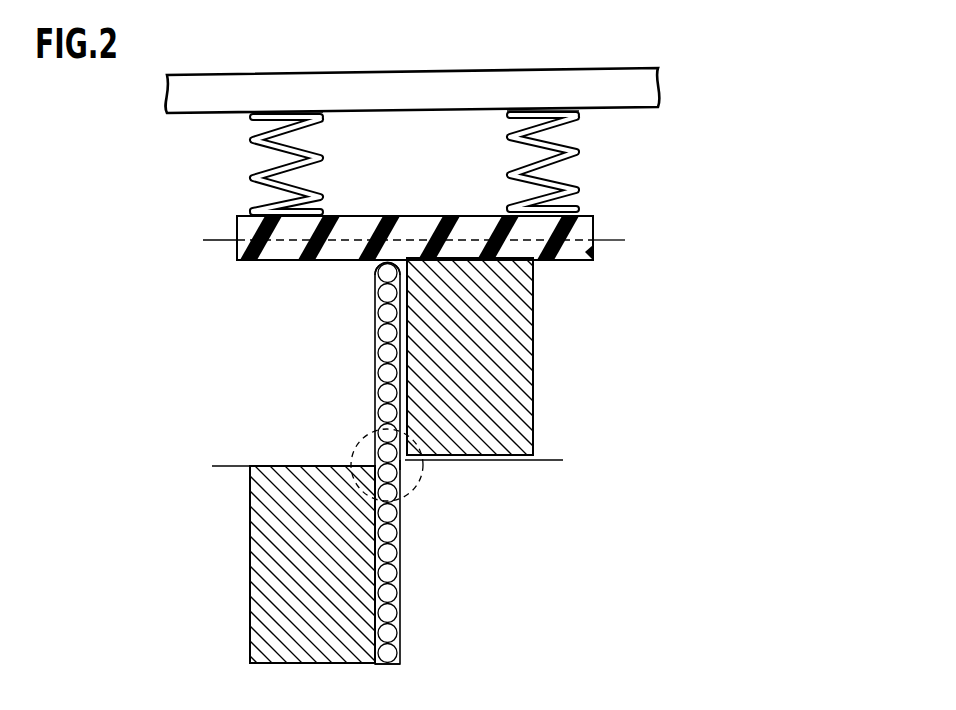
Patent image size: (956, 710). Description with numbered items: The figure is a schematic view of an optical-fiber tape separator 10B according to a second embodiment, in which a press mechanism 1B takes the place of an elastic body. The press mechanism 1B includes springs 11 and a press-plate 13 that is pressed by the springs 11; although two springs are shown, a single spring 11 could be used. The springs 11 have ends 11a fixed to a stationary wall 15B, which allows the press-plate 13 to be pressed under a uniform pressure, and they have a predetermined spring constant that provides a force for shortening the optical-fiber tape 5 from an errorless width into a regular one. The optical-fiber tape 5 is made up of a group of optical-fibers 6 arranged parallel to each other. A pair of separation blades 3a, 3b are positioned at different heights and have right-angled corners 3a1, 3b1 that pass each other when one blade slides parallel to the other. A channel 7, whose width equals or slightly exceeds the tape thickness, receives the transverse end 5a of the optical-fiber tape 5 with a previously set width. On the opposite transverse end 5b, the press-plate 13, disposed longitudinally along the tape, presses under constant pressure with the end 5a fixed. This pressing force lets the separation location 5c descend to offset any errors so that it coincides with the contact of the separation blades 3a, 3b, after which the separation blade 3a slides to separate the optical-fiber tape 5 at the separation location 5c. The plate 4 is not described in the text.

The stationary wall 15B is at (563, 88).
The optical-fiber tape separator 10B is at (720, 99).
The press mechanism 1B is at (622, 194).
The springs 11 is at (262, 162).
The ends of the springs 11a is at (325, 118).
The support plate 4 is at (590, 256).
The press-plate 13 is at (240, 262).
The separation blade 3a is at (515, 385).
The right-angled corner 3a1 is at (418, 463).
The separation blade 3b is at (270, 605).
The right-angled corner 3b1 is at (370, 466).
The optical-fiber tape 5 is at (375, 376).
The transverse end 5a is at (387, 665).
The transverse end 5b is at (375, 266).
The separation location 5c is at (402, 470).
The optical-fibers 6 is at (392, 618).
The channel 7 is at (370, 450).